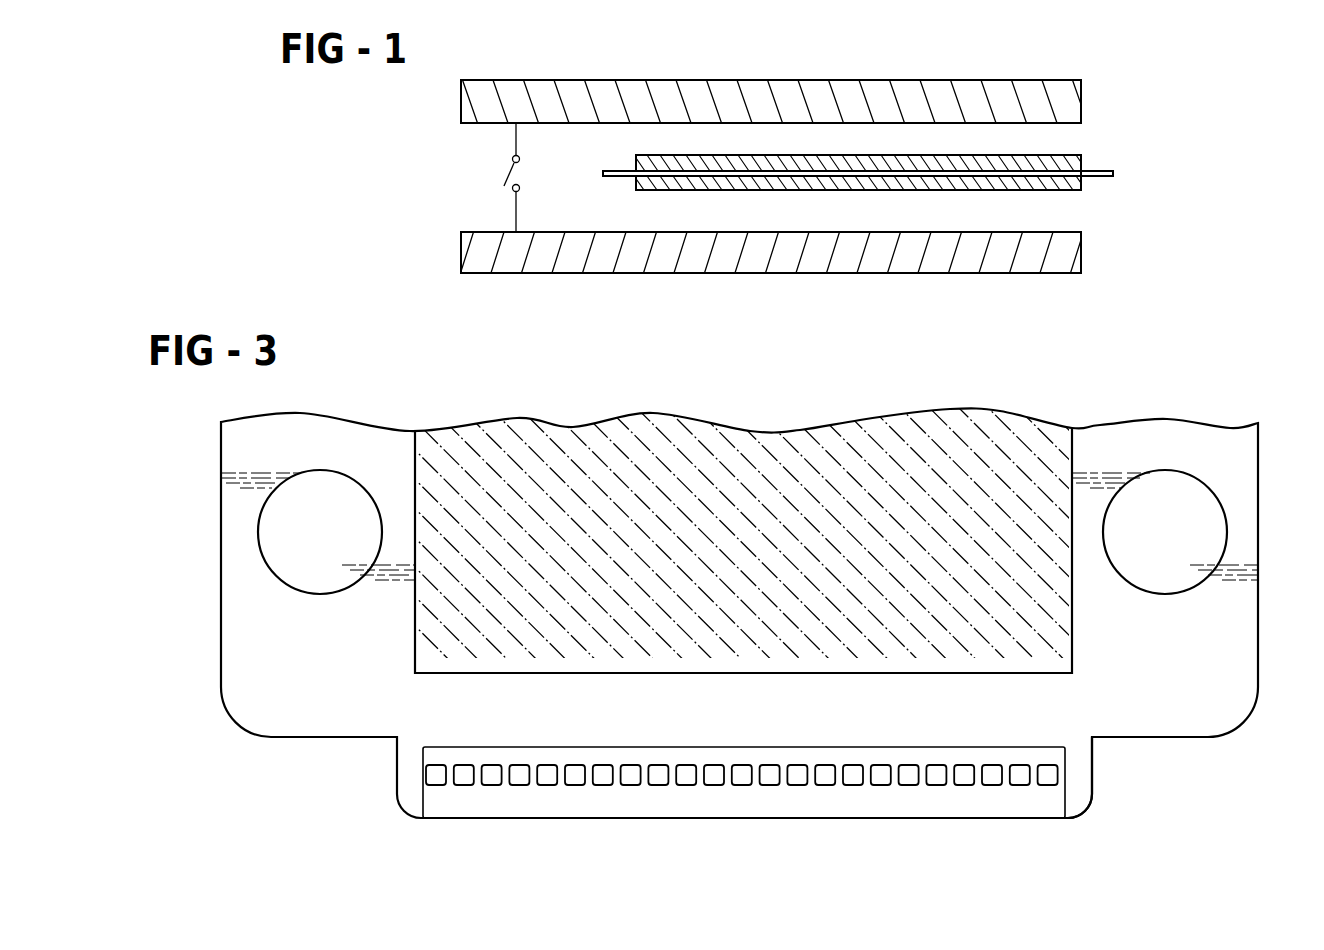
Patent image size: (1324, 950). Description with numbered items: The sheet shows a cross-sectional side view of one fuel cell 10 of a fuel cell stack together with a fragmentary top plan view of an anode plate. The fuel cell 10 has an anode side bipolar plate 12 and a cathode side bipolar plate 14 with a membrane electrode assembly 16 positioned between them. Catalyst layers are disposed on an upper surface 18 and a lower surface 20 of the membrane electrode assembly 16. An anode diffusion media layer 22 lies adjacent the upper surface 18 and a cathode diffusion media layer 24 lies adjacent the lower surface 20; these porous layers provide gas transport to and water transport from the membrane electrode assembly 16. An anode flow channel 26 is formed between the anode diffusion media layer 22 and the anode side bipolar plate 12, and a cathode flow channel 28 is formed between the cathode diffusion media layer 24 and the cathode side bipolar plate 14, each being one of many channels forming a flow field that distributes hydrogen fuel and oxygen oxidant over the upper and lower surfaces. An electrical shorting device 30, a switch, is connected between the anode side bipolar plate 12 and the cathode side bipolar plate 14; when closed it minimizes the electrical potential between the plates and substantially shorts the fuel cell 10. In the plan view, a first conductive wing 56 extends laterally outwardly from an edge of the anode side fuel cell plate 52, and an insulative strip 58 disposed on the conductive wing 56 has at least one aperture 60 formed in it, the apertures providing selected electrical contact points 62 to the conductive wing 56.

In FIG. 1, the fuel cell 10 is at (444, 201).
In FIG. 1, the anode side bipolar plate 12 is at (690, 74).
In FIG. 1, the cathode side bipolar plate 14 is at (899, 283).
In FIG. 1, the membrane electrode assembly 16 is at (1124, 173).
In FIG. 1, the upper surface 18 is at (1089, 165).
In FIG. 1, the lower surface 20 is at (1097, 181).
In FIG. 1, the anode diffusion media layer 22 is at (1022, 154).
In FIG. 1, the cathode diffusion media layer 24 is at (1057, 191).
In FIG. 1, the anode flow channel 26 is at (940, 136).
In FIG. 1, the cathode flow channel 28 is at (722, 215).
In FIG. 1, the electrical shorting device 30 is at (506, 170).
In FIG. 3, the anode side fuel cell plate 52 is at (1242, 473).
In FIG. 3, the first conductive wing 56 is at (1093, 768).
In FIG. 3, the insulative strip 58 is at (1067, 800).
In FIG. 3, the aperture 60 is at (465, 787).
In FIG. 3, the electrical contact points 62 is at (575, 787).